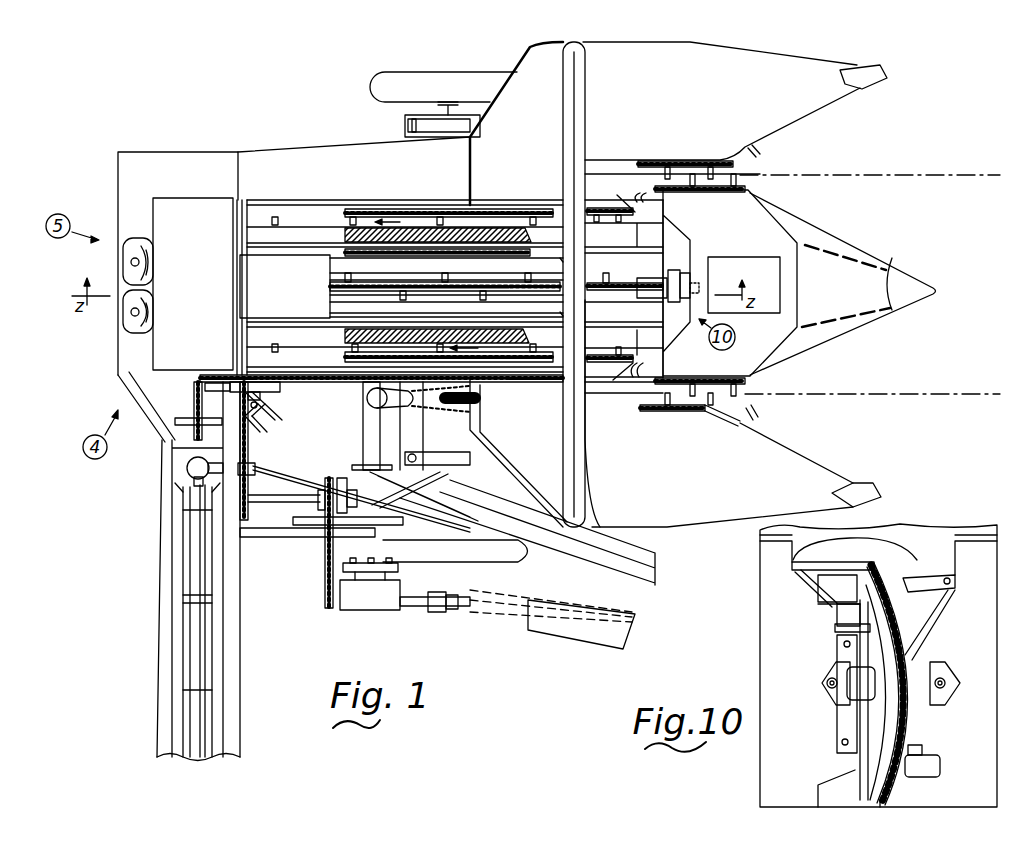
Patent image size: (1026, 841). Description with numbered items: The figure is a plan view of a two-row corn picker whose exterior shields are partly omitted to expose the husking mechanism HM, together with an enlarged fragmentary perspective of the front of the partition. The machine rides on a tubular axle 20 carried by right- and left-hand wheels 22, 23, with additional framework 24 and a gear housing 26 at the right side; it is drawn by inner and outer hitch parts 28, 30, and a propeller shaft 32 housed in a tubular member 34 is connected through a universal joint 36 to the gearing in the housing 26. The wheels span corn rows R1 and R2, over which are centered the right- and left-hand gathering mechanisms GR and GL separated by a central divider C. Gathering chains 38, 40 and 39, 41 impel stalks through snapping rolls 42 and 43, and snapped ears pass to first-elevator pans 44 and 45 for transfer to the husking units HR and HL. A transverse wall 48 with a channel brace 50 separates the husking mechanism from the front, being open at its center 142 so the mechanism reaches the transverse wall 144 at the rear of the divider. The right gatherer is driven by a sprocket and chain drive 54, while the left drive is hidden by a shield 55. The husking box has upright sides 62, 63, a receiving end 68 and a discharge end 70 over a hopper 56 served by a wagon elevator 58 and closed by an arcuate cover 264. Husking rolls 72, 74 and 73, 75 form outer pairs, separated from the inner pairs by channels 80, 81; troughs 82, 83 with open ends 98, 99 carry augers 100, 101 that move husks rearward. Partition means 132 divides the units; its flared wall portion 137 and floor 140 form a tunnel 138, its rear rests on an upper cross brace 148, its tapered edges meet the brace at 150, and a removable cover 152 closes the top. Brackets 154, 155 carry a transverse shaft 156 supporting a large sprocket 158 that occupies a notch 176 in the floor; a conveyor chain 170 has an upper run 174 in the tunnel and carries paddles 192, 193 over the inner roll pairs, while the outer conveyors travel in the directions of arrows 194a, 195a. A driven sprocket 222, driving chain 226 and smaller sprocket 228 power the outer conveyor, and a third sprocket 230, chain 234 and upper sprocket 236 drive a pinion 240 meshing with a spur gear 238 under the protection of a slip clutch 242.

In FIG. 1, the tubular axle 20 is at (428, 437).
In FIG. 1, the right-hand wheel 22 is at (518, 561).
In FIG. 1, the left-hand wheel 23 is at (438, 71).
In FIG. 1, the additional framework 24 is at (357, 465).
In FIG. 1, the gear housing 26 is at (360, 612).
In FIG. 1, the inner hitch part 28 is at (636, 614).
In FIG. 1, the outer hitch part 30 is at (656, 562).
In FIG. 1, the propeller shaft 32 is at (520, 614).
In FIG. 1, the tubular member 34 is at (575, 630).
In FIG. 1, the universal joint 36 is at (417, 612).
In FIG. 1, the gathering chain 38 is at (757, 411).
In FIG. 1, the gathering chain 39 is at (762, 157).
In FIG. 1, the gathering chain 40 is at (747, 384).
In FIG. 1, the gathering chain 41 is at (746, 189).
In FIG. 1, the snapping rolls 42 is at (622, 400).
In FIG. 1, the snapping rolls 43 is at (622, 165).
In FIG. 1, the first-elevator pan 44 is at (624, 353).
In FIG. 1, the first-elevator pan 45 is at (624, 220).
In FIG. 1, the transverse wall 48 is at (527, 284).
In FIG. 1, the transverse brace 50 is at (588, 455).
In FIG. 10, the transverse brace 50 is at (800, 543).
In FIG. 1, the sprocket and chain drive 54 is at (400, 420).
In FIG. 1, the shield 55 is at (370, 146).
In FIG. 1, the hopper 56 is at (140, 151).
In FIG. 1, the wagon elevator 58 is at (157, 610).
In FIG. 1, the right-hand upright side 62 is at (345, 381).
In FIG. 1, the left-hand upright side 63 is at (345, 200).
In FIG. 1, the forward or receiving end 68 is at (665, 248).
In FIG. 1, the rear or discharge end 70 is at (105, 307).
In FIG. 1, the husking roll 72 is at (547, 362).
In FIG. 1, the husking roll 73 is at (472, 226).
In FIG. 1, the husking roll 74 is at (494, 365).
In FIG. 1, the husking roll 75 is at (446, 230).
In FIG. 1, the inverted channel 80 is at (505, 328).
In FIG. 1, the separator 81 is at (490, 256).
In FIG. 1, the right-hand trough 82 is at (125, 322).
In FIG. 1, the left-hand trough 83 is at (130, 258).
In FIG. 1, the open rear end 98 is at (120, 332).
In FIG. 1, the open discharge end 99 is at (133, 248).
In FIG. 1, the husk auger 100 is at (132, 313).
In FIG. 1, the auger 101 is at (132, 262).
In FIG. 1, the partition means 132 is at (330, 302).
In FIG. 10, the partition means 132 is at (925, 615).
In FIG. 1, the flared wall portion 137 is at (330, 262).
In FIG. 1, the tunnel or enclosure 138 is at (330, 272).
In FIG. 10, the floor 140 is at (826, 615).
In FIG. 1, the central opening 142 is at (548, 375).
In FIG. 1, the transverse wall 144 is at (665, 224).
In FIG. 10, the transverse wall 144 is at (765, 762).
In FIG. 1, the upper cross brace 148 is at (250, 200).
In FIG. 1, the junction 150 is at (560, 315).
In FIG. 1, the removable cover 152 is at (303, 282).
In FIG. 10, the bracket 154 is at (828, 680).
In FIG. 10, the bracket 155 is at (935, 670).
In FIG. 1, the short transverse shaft 156 is at (340, 309).
In FIG. 10, the short transverse shaft 156 is at (860, 705).
In FIG. 10, the sprocket 158 is at (880, 724).
In FIG. 1, the conveyor chain 170 is at (459, 290).
In FIG. 10, the conveyor chain 170 is at (921, 748).
In FIG. 1, the upper run 174 is at (410, 282).
In FIG. 10, the upper run 174 is at (865, 572).
In FIG. 1, the notch 176 is at (645, 298).
In FIG. 10, the notch 176 is at (840, 628).
In FIG. 1, the paddles 192 is at (406, 294).
In FIG. 10, the paddles 192 is at (830, 583).
In FIG. 1, the paddles 193 is at (356, 283).
In FIG. 10, the paddles 193 is at (935, 770).
In FIG. 1, the arrow 194a is at (460, 363).
In FIG. 1, the arrow 195a is at (399, 210).
In FIG. 1, the driven sprocket 222 is at (196, 382).
In FIG. 1, the driving chain 226 is at (259, 381).
In FIG. 1, the smaller sprocket 228 is at (368, 393).
In FIG. 1, the third sprocket 230 is at (196, 390).
In FIG. 1, the chain 234 is at (262, 408).
In FIG. 1, the upper sprocket 236 is at (256, 396).
In FIG. 1, the spur gear 238 is at (220, 376).
In FIG. 1, the pinion 240 is at (245, 380).
In FIG. 1, the slip clutch 242 is at (262, 428).
In FIG. 1, the rear closure member or cover 264 is at (191, 199).
In FIG. 1, the husking mechanism HM is at (418, 190).
In FIG. 1, the left-hand husking unit HL is at (500, 213).
In FIG. 1, the right-hand husking unit HR is at (491, 396).
In FIG. 1, the left-hand picking and gathering mechanism GL is at (764, 146).
In FIG. 1, the right-hand picking and gathering mechanism GR is at (783, 437).
In FIG. 1, the corn row R2 is at (870, 175).
In FIG. 1, the corn row R1 is at (872, 393).
In FIG. 1, the central divider C is at (876, 276).